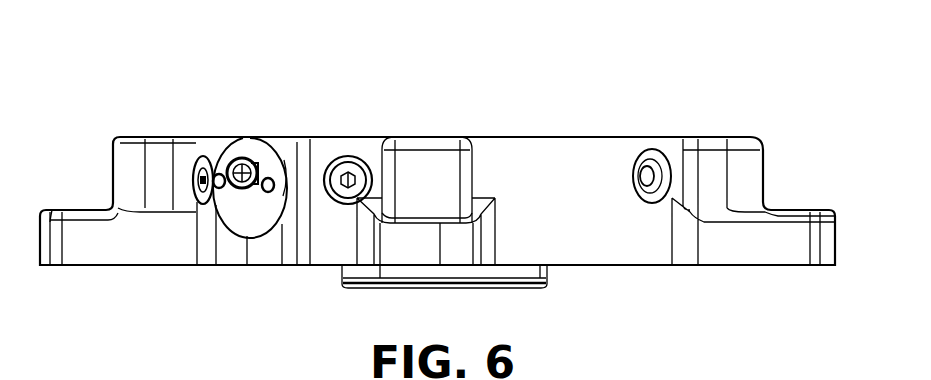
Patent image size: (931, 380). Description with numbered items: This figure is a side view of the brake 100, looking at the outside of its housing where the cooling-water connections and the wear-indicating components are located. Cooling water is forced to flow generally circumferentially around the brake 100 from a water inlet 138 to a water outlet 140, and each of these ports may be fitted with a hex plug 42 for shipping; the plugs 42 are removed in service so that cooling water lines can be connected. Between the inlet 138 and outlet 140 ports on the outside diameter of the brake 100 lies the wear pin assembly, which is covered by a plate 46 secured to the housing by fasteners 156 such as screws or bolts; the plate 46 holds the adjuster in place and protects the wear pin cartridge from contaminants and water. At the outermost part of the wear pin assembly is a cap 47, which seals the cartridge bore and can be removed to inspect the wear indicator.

The brake 100 is at (142, 100).
The water outlet 140 is at (202, 143).
The cap 47 is at (241, 125).
The hex plug 42 is at (338, 157).
The water inlet 138 is at (357, 155).
The fastener 156 is at (220, 190).
The plate 46 is at (257, 204).